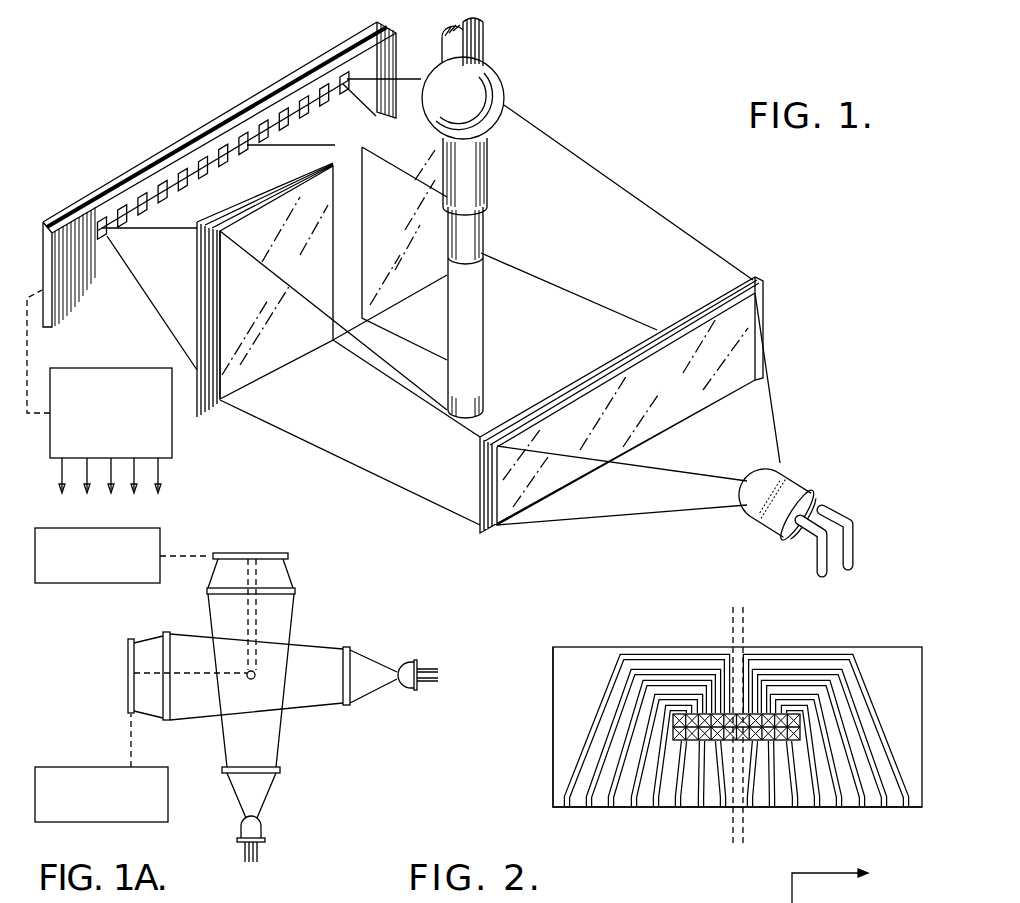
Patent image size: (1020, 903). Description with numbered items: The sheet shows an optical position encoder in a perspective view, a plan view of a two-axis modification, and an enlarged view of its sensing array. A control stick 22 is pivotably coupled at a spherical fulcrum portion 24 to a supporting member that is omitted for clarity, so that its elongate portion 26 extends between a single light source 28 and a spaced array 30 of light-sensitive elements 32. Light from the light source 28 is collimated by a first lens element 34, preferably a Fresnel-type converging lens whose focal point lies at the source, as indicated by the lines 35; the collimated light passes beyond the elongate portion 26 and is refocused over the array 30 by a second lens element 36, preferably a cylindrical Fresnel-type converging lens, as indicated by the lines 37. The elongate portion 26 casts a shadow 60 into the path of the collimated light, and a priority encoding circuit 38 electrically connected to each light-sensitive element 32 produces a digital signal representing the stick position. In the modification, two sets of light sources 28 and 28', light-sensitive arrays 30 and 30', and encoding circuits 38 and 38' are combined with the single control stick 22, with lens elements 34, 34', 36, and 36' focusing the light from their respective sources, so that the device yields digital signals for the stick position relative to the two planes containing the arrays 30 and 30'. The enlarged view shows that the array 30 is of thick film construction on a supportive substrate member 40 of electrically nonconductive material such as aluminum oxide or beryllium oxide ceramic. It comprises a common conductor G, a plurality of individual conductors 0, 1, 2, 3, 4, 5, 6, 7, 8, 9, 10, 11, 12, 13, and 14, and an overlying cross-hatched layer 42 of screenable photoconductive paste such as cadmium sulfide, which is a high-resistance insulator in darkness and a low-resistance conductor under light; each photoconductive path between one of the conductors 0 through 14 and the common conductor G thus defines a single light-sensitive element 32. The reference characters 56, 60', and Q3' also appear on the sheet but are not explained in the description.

In FIG. 1, the control stick 22 is at (484, 54).
In FIG. 1, the spherical fulcrum portion 24 is at (505, 100).
In FIG. 1, the elongate portion 26 is at (481, 300).
In FIG. 1A, the elongate portion 26 is at (251, 679).
In FIG. 1, the light source 28 is at (788, 509).
In FIG. 1A, the light source 28 is at (412, 662).
In FIG. 1A, the second light source 28' is at (274, 839).
In FIG. 1, the spaced array of light-sensitive elements 30 is at (219, 174).
In FIG. 1A, the spaced array of light-sensitive elements 30 is at (101, 676).
In FIG. 2, the spaced array of light-sensitive elements 30 is at (723, 703).
In FIG. 1A, the second light-sensitive array 30' is at (268, 555).
In FIG. 1, the light-sensitive element 32 is at (352, 80).
In FIG. 1, the first lens element 34 is at (644, 393).
In FIG. 1A, the first lens element 34 is at (370, 690).
In FIG. 1A, the first lens element of second set 34' is at (279, 792).
In FIG. 1, the light ray lines 35 is at (591, 164).
In FIG. 1, the second lens element 36 is at (265, 314).
In FIG. 1A, the second lens element 36 is at (253, 697).
In FIG. 1A, the second lens element of second set 36' is at (277, 662).
In FIG. 1, the light ray lines 37 is at (411, 78).
In FIG. 1, the priority encoding circuit 38 is at (122, 396).
In FIG. 1A, the priority encoding circuit 38 is at (126, 781).
In FIG. 1A, the second encoding circuit 38' is at (122, 573).
In FIG. 2, the supportive substrate member 40 is at (562, 733).
In FIG. 2, the photoconductive layer 42 is at (780, 738).
In FIG. 2, the output lead 56 is at (887, 902).
In FIG. 1, the shadow 60 is at (350, 292).
In FIG. 1A, the shadow 60 is at (161, 672).
In FIG. 2, the shadow 60 is at (757, 716).
In FIG. 1A, the second optical axis 60' is at (288, 614).
In FIG. 2, the individual conductor 0 is at (840, 809).
In FIG. 2, the individual conductor 1 is at (818, 809).
In FIG. 2, the individual conductor 2 is at (863, 809).
In FIG. 2, the individual conductor 3 is at (795, 809).
In FIG. 2, the individual conductor 4 is at (885, 809).
In FIG. 2, the individual conductor 5 is at (773, 809).
In FIG. 2, the individual conductor 6 is at (907, 809).
In FIG. 2, the individual conductor 7 is at (750, 809).
In FIG. 2, the individual conductor 8 is at (568, 809).
In FIG. 2, the individual conductor 9 is at (722, 809).
In FIG. 2, the individual conductor 10 is at (590, 809).
In FIG. 2, the individual conductor 11 is at (708, 809).
In FIG. 2, the individual conductor 12 is at (616, 809).
In FIG. 2, the individual conductor 13 is at (678, 809).
In FIG. 2, the individual conductor 14 is at (636, 809).
In FIG. 2, the common conductor G is at (663, 809).
In FIG. 2, the transistor output Q3' is at (887, 882).